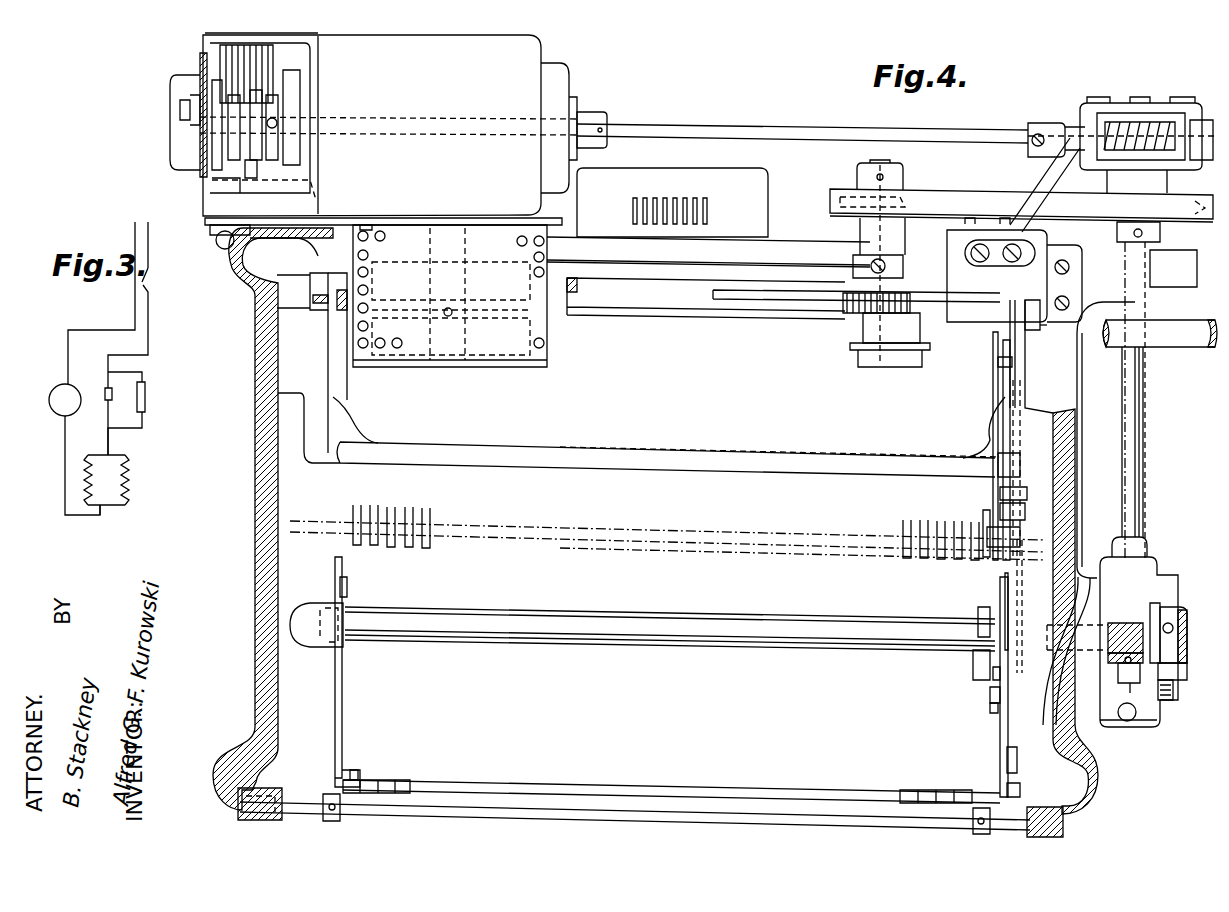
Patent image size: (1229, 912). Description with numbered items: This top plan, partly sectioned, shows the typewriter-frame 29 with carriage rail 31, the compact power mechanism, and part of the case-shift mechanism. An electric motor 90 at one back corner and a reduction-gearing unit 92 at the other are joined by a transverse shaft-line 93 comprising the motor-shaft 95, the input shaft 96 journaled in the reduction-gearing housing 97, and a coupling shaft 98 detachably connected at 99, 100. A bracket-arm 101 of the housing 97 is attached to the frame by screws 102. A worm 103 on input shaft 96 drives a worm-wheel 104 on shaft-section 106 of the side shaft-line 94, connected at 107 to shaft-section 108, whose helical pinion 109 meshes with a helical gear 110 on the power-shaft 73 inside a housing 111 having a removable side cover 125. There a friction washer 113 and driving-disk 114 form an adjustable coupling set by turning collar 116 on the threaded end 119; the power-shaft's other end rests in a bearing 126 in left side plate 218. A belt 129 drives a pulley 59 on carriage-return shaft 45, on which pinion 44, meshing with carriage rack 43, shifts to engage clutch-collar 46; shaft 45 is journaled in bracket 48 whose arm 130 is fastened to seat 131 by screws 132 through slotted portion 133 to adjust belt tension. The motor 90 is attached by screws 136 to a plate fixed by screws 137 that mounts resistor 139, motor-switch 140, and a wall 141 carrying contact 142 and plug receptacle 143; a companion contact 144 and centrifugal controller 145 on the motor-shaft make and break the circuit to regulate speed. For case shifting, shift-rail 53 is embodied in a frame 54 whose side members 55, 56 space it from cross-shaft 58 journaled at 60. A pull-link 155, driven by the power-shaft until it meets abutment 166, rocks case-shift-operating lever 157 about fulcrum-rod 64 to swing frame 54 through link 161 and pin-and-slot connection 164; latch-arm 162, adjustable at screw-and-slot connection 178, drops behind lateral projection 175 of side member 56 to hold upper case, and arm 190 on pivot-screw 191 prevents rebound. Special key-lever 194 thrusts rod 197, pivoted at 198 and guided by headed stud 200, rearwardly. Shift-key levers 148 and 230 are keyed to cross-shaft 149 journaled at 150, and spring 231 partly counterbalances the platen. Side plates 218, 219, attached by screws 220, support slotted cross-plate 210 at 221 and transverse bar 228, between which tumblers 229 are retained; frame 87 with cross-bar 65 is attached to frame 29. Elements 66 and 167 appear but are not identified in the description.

In FIG. 4, the typewriter-frame 29 is at (280, 368).
In FIG. 4, the rail 31 is at (1160, 401).
In FIG. 4, the rack 43 is at (714, 297).
In FIG. 4, the carriage return pinion 44 is at (850, 314).
In FIG. 4, the carriage-return shaft 45 is at (858, 354).
In FIG. 4, the clutch-collar 46 is at (853, 266).
In FIG. 4, the bracket 48 is at (860, 232).
In FIG. 4, the shift-rail 53 is at (820, 458).
In FIG. 4, the shift-rail frame 54 is at (374, 427).
In FIG. 4, the side member 55 is at (332, 385).
In FIG. 4, the side member 56 is at (1020, 387).
In FIG. 4, the cross-shaft 58 is at (706, 298).
In FIG. 4, the pulley 59 is at (857, 183).
In FIG. 4, the journal 60 is at (322, 283).
In FIG. 4, the fulcrum-rod 64 is at (1020, 541).
In FIG. 4, the cross-bar 65 is at (666, 471).
In FIG. 4, the fingers 66 is at (418, 505).
In FIG. 4, the power-shaft 73 is at (785, 619).
In FIG. 4, the frame 87 is at (1045, 423).
In FIG. 3, the electric motor 90 is at (65, 400).
In FIG. 4, the electric motor 90 is at (563, 58).
In FIG. 4, the reduction-gearing unit 92 is at (1165, 105).
In FIG. 4, the transverse shaft-line 93 is at (835, 121).
In FIG. 4, the side shaft-line 94 is at (1148, 452).
In FIG. 4, the motor-shaft 95 is at (445, 119).
In FIG. 4, the input shaft 96 is at (1082, 123).
In FIG. 4, the reduction-gearing housing 97 is at (1170, 182).
In FIG. 4, the coupling shaft 98 is at (730, 123).
In FIG. 4, the detachable connection 99 is at (595, 113).
In FIG. 4, the detachable connection 100 is at (1040, 124).
In FIG. 4, the bracket-arm 101 is at (1050, 164).
In FIG. 4, the screws 102 is at (972, 215).
In FIG. 4, the worm 103 is at (1118, 122).
In FIG. 4, the worm-wheel 104 is at (1185, 130).
In FIG. 4, the shaft-section 106 is at (1135, 387).
In FIG. 4, the detachable connection 107 is at (1140, 540).
In FIG. 4, the shaft-section 108 is at (1158, 568).
In FIG. 4, the helical pinion 109 is at (1110, 657).
In FIG. 4, the helical gear 110 is at (1110, 622).
In FIG. 4, the housing 111 is at (1112, 732).
In FIG. 4, the resilient friction washer 113 is at (1154, 610).
In FIG. 4, the driving-disk 114 is at (1135, 684).
In FIG. 4, the power-shaft collar 116 is at (1186, 624).
In FIG. 4, the threaded end 119 is at (1188, 658).
In FIG. 4, the side cover 125 is at (1175, 696).
In FIG. 4, the bearing 126 is at (326, 607).
In FIG. 4, the belt 129 is at (948, 192).
In FIG. 4, the laterally-extending arm 130 is at (1042, 242).
In FIG. 4, the seat 131 is at (1061, 283).
In FIG. 4, the screws 132 is at (978, 264).
In FIG. 4, the slotted portion 133 is at (1008, 264).
In FIG. 4, the screws 136 is at (372, 207).
In FIG. 4, the screws 137 is at (325, 216).
In FIG. 3, the resistor 139 is at (106, 488).
In FIG. 4, the resistor 139 is at (404, 266).
In FIG. 3, the motor-switch 140 is at (150, 276).
In FIG. 4, the motor-switch 140 is at (216, 242).
In FIG. 4, the wall 141 is at (203, 186).
In FIG. 3, the contact 142 is at (113, 398).
In FIG. 4, the contact 142 is at (236, 140).
In FIG. 4, the receptacle 143 is at (216, 60).
In FIG. 3, the insulated contact 144 is at (104, 391).
In FIG. 4, the centrifugal controller 145 is at (247, 174).
In FIG. 4, the shift-key lever 148 is at (988, 802).
In FIG. 4, the cross-shaft 149 is at (285, 786).
In FIG. 4, the journal 150 is at (1035, 807).
In FIG. 4, the pull-link 155 is at (973, 662).
In FIG. 4, the case-shift-operating lever 157 is at (983, 517).
In FIG. 4, the link 161 is at (1002, 382).
In FIG. 4, the latch-arm 162 is at (1020, 464).
In FIG. 4, the pin-and-slot connection 164 is at (992, 344).
In FIG. 4, the abutment 166 is at (990, 696).
In FIG. 4, the block 167 is at (978, 614).
In FIG. 4, the lateral projection 175 is at (998, 364).
In FIG. 4, the screw and slot connection 178 is at (1015, 495).
In FIG. 4, the rebound-preventing arm 190 is at (993, 674).
In FIG. 4, the pivot-screw 191 is at (990, 710).
In FIG. 4, the special key-lever 194 is at (1018, 790).
In FIG. 4, the rod 197 is at (1017, 515).
In FIG. 4, the pivot 198 is at (1017, 764).
In FIG. 4, the headed stud 200 is at (985, 430).
In FIG. 4, the slotted cross-plate 210 is at (934, 790).
In FIG. 4, the left side plate 218 is at (343, 714).
In FIG. 4, the right side plate 219 is at (1000, 740).
In FIG. 4, the screws 220 is at (348, 587).
In FIG. 4, the support 221 is at (362, 777).
In FIG. 4, the transverse bar 228 is at (498, 782).
In FIG. 4, the tumblers 229 is at (398, 786).
In FIG. 4, the shift-key lever 230 is at (325, 794).
In FIG. 4, the spring 231 is at (1030, 328).